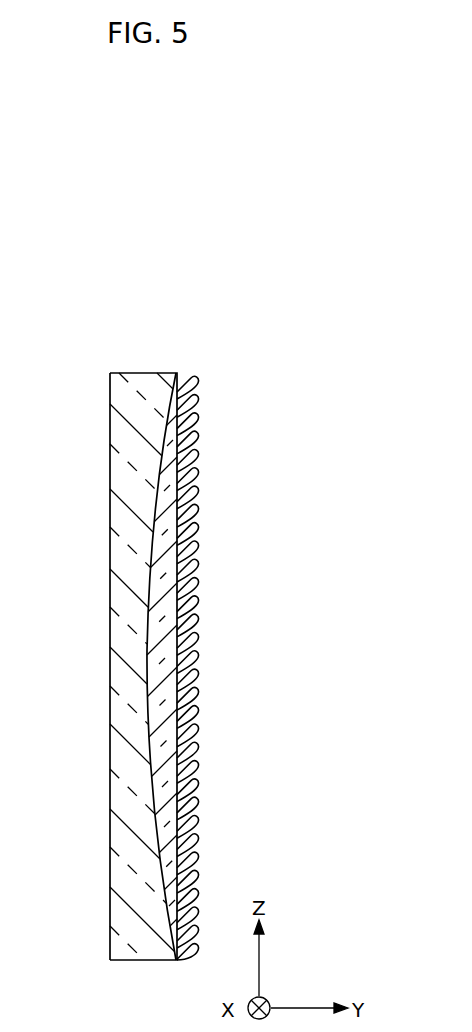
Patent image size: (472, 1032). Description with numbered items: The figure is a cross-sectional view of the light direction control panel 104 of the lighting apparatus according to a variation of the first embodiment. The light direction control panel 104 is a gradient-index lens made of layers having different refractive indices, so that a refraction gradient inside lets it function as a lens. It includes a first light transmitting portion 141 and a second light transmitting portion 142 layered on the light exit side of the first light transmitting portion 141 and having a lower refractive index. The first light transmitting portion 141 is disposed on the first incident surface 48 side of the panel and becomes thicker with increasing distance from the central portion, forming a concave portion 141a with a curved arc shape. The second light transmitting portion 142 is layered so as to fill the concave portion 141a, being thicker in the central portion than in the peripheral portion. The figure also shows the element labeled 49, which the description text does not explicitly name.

The light direction control panel 104 is at (233, 338).
The first light transmitting portion 141 is at (133, 422).
The concave portion 141a is at (147, 644).
The second light transmitting portion 142 is at (193, 413).
The first incident surface 48 is at (117, 692).
The prism surface 49 is at (195, 673).